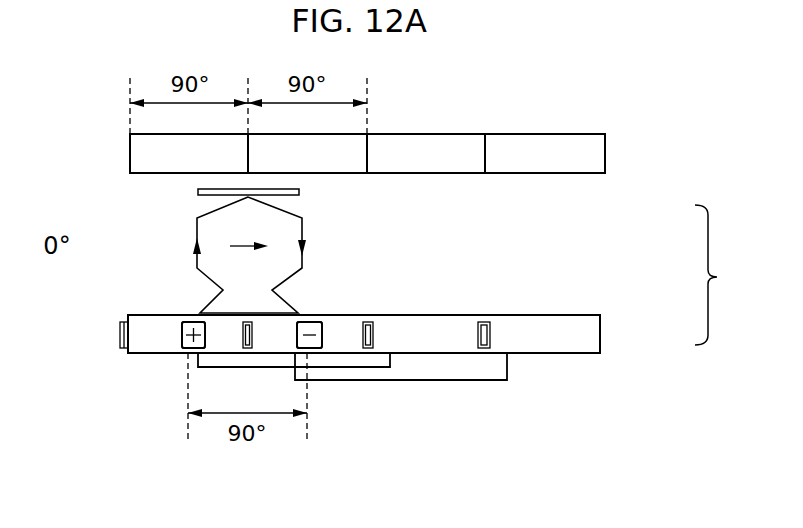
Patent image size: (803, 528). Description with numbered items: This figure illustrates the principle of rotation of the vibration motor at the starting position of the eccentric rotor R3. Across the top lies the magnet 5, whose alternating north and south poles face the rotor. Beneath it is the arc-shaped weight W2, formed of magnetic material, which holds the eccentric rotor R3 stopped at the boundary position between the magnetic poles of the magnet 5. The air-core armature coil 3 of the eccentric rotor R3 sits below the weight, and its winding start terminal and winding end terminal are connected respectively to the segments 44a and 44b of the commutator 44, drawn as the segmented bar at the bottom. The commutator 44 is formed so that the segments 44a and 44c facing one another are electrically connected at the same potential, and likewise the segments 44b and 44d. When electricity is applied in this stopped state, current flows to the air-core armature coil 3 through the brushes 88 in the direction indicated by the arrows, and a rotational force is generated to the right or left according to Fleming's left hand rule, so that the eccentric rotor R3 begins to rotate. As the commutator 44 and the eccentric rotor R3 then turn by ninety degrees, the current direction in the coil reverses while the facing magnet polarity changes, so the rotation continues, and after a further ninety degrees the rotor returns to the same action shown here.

The magnet 5 is at (605, 152).
The arc-shaped weight W2 is at (198, 191).
The air-core armature coil 3 is at (197, 228).
The commutator 44 is at (615, 332).
The segment 44a is at (137, 345).
The segment 44b is at (275, 343).
The segment 44c is at (427, 343).
The segment 44d is at (552, 343).
The brushes 88 is at (182, 350).
The eccentric rotor R3 is at (726, 275).